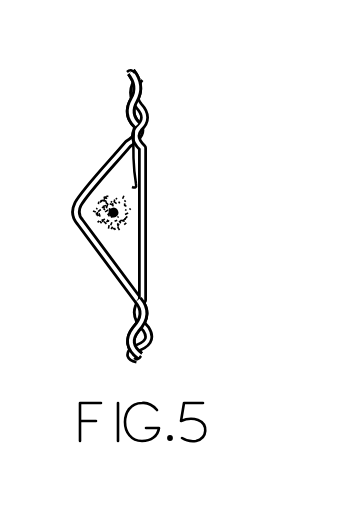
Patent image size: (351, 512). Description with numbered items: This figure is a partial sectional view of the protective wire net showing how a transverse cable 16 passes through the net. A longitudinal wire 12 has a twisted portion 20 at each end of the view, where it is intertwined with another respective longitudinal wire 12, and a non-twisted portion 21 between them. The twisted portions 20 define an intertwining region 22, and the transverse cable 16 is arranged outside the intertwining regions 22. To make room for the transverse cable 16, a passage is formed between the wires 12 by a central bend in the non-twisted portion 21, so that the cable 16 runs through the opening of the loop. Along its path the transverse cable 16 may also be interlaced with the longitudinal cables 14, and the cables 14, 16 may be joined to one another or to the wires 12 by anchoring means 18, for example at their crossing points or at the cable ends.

The longitudinal wire 12 is at (112, 157).
The longitudinal cable 14 is at (24, 390).
The transverse cable 16 is at (134, 233).
The anchoring means 18 is at (24, 483).
The twisted portion 20 is at (140, 81).
The non-twisted portion 21 is at (80, 197).
The intertwining region 22 is at (100, 87).